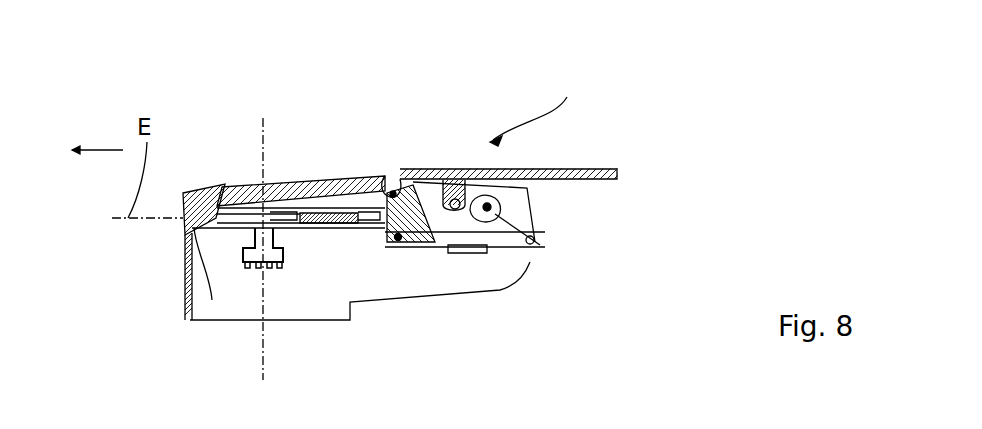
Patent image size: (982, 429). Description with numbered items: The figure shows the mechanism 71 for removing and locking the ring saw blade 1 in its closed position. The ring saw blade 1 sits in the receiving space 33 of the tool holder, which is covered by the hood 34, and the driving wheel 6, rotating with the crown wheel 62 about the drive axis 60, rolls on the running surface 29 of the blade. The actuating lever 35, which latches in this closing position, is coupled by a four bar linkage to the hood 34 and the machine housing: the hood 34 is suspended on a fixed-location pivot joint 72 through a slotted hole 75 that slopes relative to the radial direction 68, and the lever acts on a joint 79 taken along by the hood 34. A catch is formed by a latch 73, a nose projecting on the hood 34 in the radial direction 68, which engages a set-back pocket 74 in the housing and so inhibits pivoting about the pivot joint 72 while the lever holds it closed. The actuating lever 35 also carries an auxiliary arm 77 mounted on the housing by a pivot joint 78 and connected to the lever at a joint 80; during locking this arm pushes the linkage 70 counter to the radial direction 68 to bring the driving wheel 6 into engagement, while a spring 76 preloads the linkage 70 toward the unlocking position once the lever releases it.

The ring saw blade 1 is at (330, 230).
The driving wheel 6 is at (299, 215).
The running surface 29 is at (284, 228).
The receiving space 33 is at (345, 177).
The hood 34 is at (190, 190).
The actuating lever 35 is at (620, 175).
The drive axis 60 is at (258, 130).
The crown wheel 62 is at (268, 272).
The radial direction 68 is at (96, 143).
The linkage 70 is at (455, 210).
The mechanism 71 is at (536, 106).
The pivot joint 72 is at (415, 247).
The latch 73 is at (194, 230).
The pocket 74 is at (185, 228).
The slotted hole 75 is at (399, 244).
The spring 76 is at (540, 247).
The auxiliary arm 77 is at (528, 244).
The pivot joint 78 is at (500, 226).
The joint 79 is at (393, 190).
The joint 80 is at (485, 214).